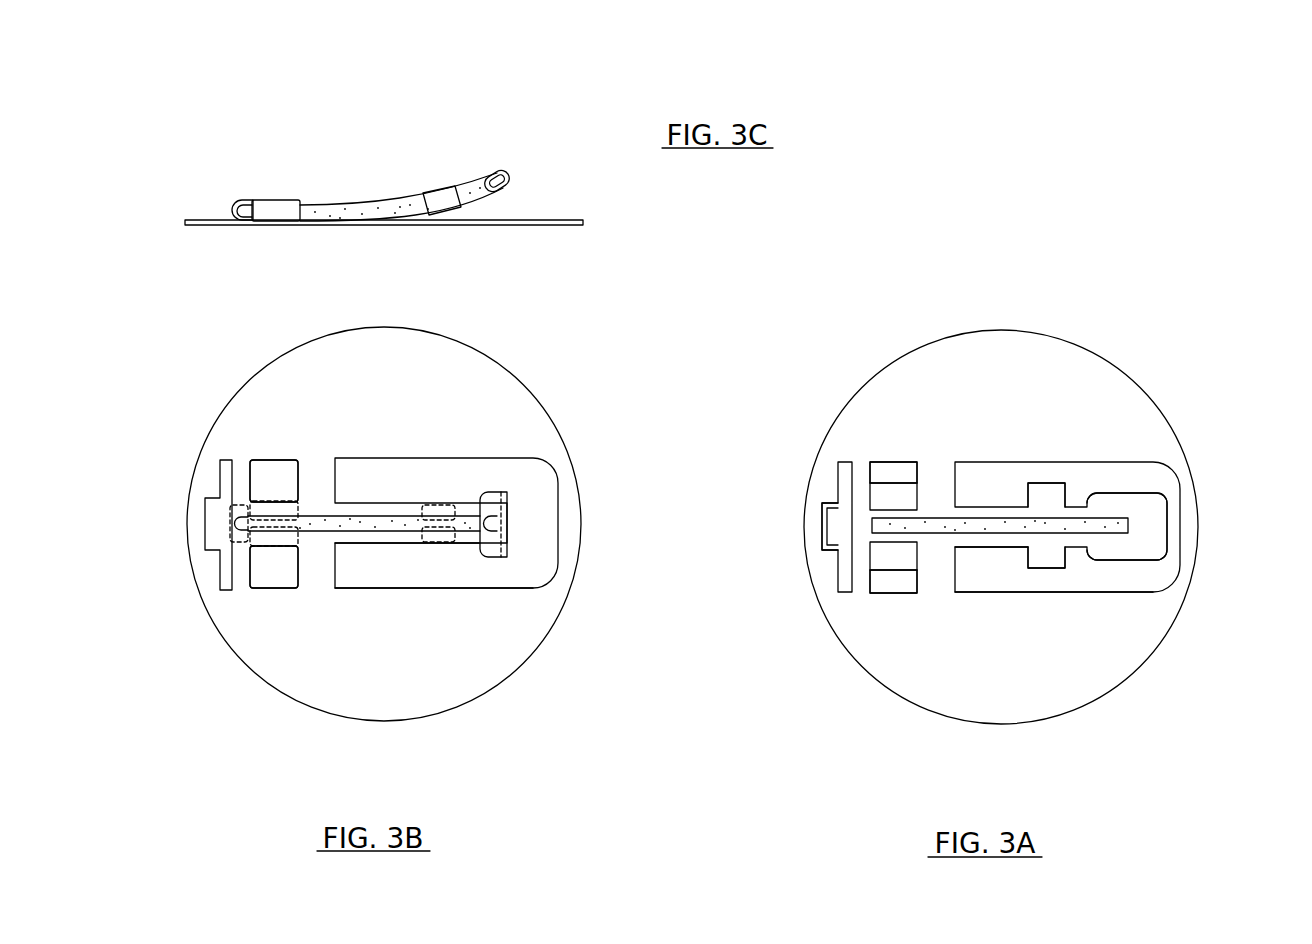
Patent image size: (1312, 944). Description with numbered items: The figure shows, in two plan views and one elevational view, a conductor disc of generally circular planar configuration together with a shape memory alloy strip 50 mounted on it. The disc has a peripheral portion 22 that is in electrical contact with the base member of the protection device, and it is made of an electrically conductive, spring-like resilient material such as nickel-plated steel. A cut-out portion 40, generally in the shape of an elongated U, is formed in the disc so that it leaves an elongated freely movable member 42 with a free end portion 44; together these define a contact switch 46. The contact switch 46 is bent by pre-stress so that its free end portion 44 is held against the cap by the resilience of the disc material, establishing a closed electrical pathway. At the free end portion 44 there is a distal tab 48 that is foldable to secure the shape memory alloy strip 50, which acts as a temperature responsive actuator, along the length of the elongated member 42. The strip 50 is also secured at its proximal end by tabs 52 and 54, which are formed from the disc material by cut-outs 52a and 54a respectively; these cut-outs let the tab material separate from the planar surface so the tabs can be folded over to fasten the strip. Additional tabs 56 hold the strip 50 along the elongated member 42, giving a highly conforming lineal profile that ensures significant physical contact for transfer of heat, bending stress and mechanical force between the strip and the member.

In FIG. 3C, the peripheral portion 22 is at (567, 222).
In FIG. 3B, the cut-out portion 40 is at (520, 468).
In FIG. 3A, the cut-out portion 40 is at (1103, 478).
In FIG. 3B, the elongated freely movable member 42 is at (392, 550).
In FIG. 3A, the elongated freely movable member 42 is at (1002, 558).
In FIG. 3C, the free end portion 44 is at (490, 212).
In FIG. 3B, the free end portion 44 is at (475, 560).
In FIG. 3A, the free end portion 44 is at (1128, 570).
In FIG. 3C, the contact switch 46 is at (367, 200).
In FIG. 3B, the contact switch 46 is at (380, 503).
In FIG. 3A, the contact switch 46 is at (982, 502).
In FIG. 3C, the distal tab 48 is at (505, 177).
In FIG. 3B, the distal tab 48 is at (502, 503).
In FIG. 3A, the distal tab 48 is at (1150, 528).
In FIG. 3C, the shape memory alloy strip 50 is at (318, 203).
In FIG. 3B, the shape memory alloy strip 50 is at (353, 525).
In FIG. 3A, the shape memory alloy strip 50 is at (978, 527).
In FIG. 3C, the proximal tab 52 is at (273, 210).
In FIG. 3B, the proximal tab 52 is at (275, 508).
In FIG. 3A, the proximal tab 52 is at (890, 498).
In FIG. 3B, the cut-out 52a is at (282, 477).
In FIG. 3A, the cut-out 52a is at (897, 472).
In FIG. 3C, the proximal tab 54 is at (245, 202).
In FIG. 3B, the proximal tab 54 is at (240, 507).
In FIG. 3A, the proximal tab 54 is at (842, 520).
In FIG. 3B, the cut-out 54a is at (215, 528).
In FIG. 3A, the cut-out 54a is at (842, 568).
In FIG. 3C, the tabs 56 is at (442, 198).
In FIG. 3B, the tabs 56 is at (443, 503).
In FIG. 3A, the tabs 56 is at (1047, 493).